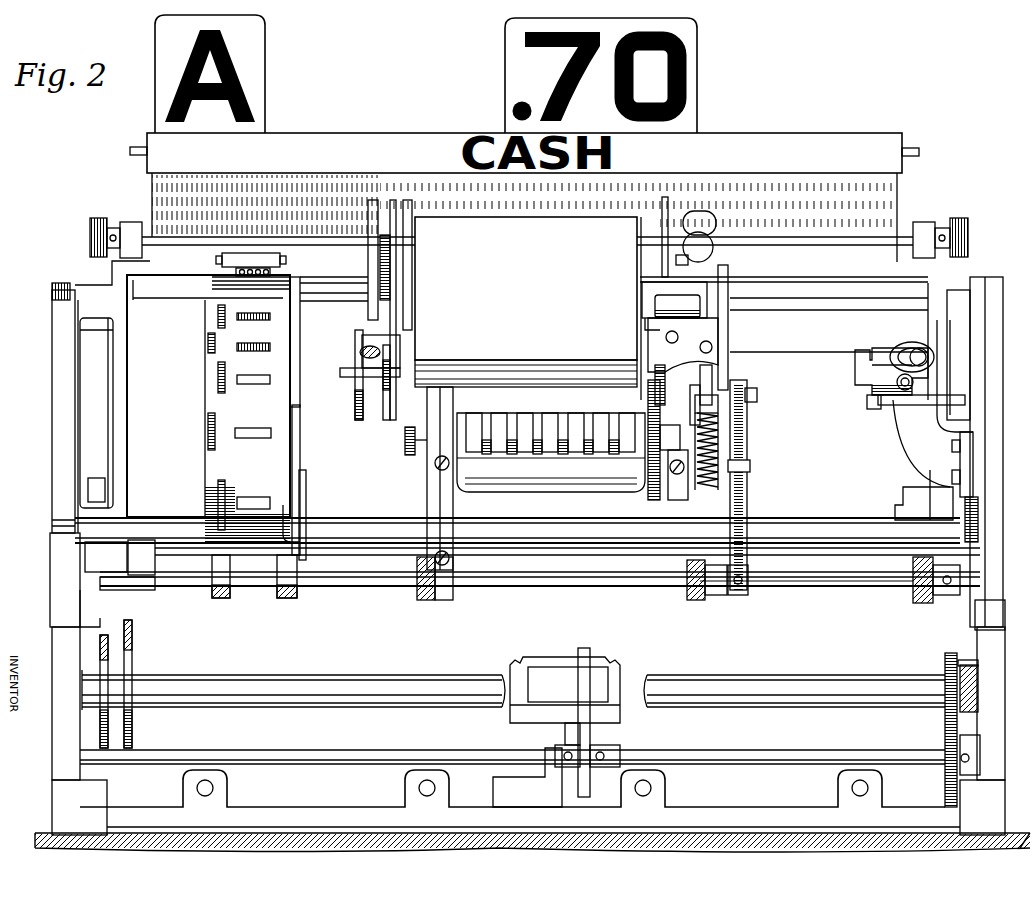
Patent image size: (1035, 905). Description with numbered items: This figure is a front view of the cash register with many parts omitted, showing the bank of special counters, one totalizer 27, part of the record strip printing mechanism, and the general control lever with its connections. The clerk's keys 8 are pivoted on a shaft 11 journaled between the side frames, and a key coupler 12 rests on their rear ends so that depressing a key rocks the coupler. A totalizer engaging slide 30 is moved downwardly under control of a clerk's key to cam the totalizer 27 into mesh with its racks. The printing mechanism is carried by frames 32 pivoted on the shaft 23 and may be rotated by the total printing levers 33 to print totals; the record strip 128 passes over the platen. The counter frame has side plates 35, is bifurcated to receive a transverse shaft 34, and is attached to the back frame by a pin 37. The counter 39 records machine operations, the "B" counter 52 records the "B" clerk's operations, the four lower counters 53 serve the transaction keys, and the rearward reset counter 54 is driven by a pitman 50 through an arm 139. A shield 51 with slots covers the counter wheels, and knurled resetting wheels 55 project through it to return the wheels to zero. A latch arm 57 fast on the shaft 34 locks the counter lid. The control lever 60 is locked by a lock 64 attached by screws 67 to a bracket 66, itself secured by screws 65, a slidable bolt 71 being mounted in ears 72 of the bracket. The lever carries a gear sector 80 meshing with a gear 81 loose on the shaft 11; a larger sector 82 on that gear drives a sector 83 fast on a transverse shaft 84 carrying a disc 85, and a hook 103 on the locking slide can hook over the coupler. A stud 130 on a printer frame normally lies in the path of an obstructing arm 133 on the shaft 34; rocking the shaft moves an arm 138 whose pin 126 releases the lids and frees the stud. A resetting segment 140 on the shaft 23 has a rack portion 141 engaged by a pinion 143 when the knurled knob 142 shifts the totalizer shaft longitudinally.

The clerk's keys 8 is at (105, 635).
The shaft 11 is at (304, 676).
The key coupler 12 is at (530, 665).
The shaft 23 is at (350, 528).
The totalizer 27 is at (551, 452).
The totalizer engaging slide 30 is at (430, 417).
The printer frames 32 is at (730, 348).
The total printing levers 33 is at (714, 240).
The transverse shaft 34 is at (373, 580).
The side plates 35 is at (278, 560).
The pin 37 is at (258, 254).
The counter 39 is at (215, 278).
The pitman 50 is at (298, 407).
The shield 51 is at (212, 402).
The "B" counter 52 is at (255, 317).
The lower counters 53 is at (270, 380).
The reset counter 54 is at (272, 271).
The knurled resetting wheels 55 is at (218, 378).
The latch arm 57 is at (305, 510).
The control lever 60 is at (970, 352).
The lock 64 is at (855, 360).
The screws 65 is at (952, 475).
The bracket 66 is at (896, 432).
The screws 67 is at (913, 385).
The slidable bolt 71 is at (965, 401).
The ears 72 is at (878, 409).
The gear sector 80 is at (972, 664).
The gear 81 is at (976, 680).
The gear sector 82 is at (945, 672).
The gear sector 83 is at (957, 750).
The transverse shaft 84 is at (866, 752).
The disc 85 is at (575, 729).
The hook 103 is at (593, 730).
The pin 126 is at (751, 468).
The record strip 128 is at (528, 308).
The stud 130 is at (748, 402).
The obstructing arm 133 is at (748, 441).
The arm 138 is at (749, 558).
The arm 139 is at (300, 438).
The resetting segment 140 is at (665, 199).
The segmental rack portion 141 is at (658, 500).
The knurled knob 142 is at (405, 440).
The pinion 143 is at (652, 420).